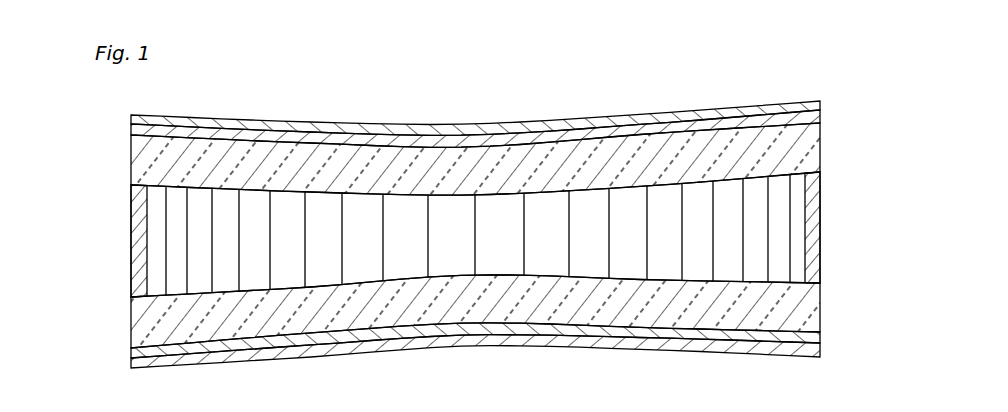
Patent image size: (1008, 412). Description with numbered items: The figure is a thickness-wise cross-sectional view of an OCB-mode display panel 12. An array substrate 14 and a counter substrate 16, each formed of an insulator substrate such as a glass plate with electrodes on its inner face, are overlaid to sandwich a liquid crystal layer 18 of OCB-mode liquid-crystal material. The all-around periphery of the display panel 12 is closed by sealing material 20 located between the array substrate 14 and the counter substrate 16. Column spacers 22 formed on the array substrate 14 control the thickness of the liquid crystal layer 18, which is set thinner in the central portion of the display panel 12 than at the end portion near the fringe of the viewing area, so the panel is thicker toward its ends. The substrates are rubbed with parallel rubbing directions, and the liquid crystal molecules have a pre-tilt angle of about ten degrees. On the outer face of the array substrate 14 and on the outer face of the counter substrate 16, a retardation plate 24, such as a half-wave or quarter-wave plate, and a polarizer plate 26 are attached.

The display panel 12 is at (483, 62).
The array substrate 14 is at (140, 321).
The counter substrate 16 is at (131, 167).
The liquid crystal layer 18 is at (410, 222).
The sealing material 20 is at (136, 233).
The column spacers 22 is at (167, 202).
The retardation plate 24 is at (131, 130).
The polarizer plate 26 is at (138, 117).